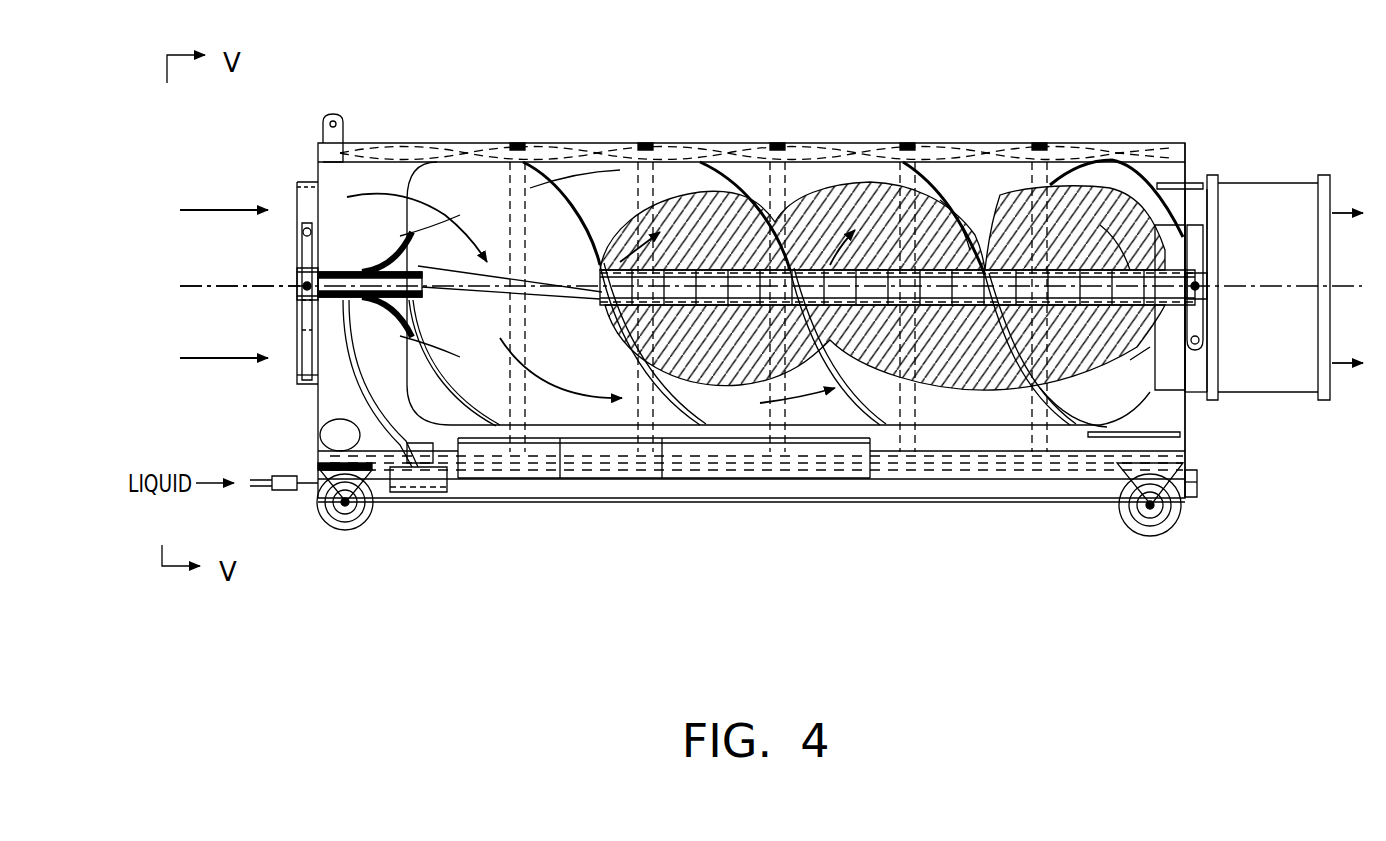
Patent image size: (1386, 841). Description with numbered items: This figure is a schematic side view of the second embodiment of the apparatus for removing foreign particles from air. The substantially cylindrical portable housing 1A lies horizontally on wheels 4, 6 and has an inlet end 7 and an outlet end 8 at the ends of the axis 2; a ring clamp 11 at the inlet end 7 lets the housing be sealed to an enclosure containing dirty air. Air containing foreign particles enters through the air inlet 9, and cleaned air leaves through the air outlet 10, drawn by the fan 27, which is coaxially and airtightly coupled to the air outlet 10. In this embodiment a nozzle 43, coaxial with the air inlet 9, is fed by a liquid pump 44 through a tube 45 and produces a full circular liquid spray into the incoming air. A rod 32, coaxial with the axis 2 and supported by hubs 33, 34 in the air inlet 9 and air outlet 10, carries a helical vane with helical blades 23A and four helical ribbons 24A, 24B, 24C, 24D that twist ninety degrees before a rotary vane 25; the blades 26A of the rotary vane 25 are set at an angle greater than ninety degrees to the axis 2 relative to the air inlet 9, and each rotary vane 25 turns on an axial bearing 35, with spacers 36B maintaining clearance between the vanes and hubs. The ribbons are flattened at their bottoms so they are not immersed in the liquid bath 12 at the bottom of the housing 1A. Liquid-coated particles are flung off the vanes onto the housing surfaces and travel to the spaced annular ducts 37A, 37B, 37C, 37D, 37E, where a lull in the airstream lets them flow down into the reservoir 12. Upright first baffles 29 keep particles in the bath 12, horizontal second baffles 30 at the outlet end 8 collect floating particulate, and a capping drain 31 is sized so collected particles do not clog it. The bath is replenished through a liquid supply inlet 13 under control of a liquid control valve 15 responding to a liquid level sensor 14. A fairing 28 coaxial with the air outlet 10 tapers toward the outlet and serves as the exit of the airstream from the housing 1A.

The housing 1A is at (712, 160).
The axis 2 is at (232, 290).
The wheel 4 is at (348, 530).
The wheel 6 is at (1148, 536).
The inlet end 7 is at (317, 177).
The outlet end 8 is at (1187, 150).
The air inlet 9 is at (297, 362).
The air outlet 10 is at (1200, 183).
The ring clamp 11 is at (335, 114).
The liquid bath 12 is at (925, 462).
The liquid supply inlet 13 is at (283, 490).
The liquid level sensor 14 is at (372, 487).
The liquid control valve 15 is at (418, 443).
The helical blade 23A is at (408, 200).
The helical ribbon 24A is at (578, 258).
The helical ribbon 24B is at (737, 163).
The helical ribbon 24C is at (920, 225).
The helical ribbon 24D is at (1110, 185).
The rotary vane 25 is at (797, 215).
The vane blade 26A is at (810, 205).
The fan 27 is at (1265, 183).
The fairing 28 is at (1160, 392).
The first baffles 29 is at (663, 455).
The second baffles 30 is at (1145, 435).
The capping drain 31 is at (1197, 488).
The rod 32 is at (328, 272).
The hub 33 is at (303, 268).
The hub 34 is at (1198, 277).
The axial bearing 35 is at (950, 200).
The spacer 36B is at (1108, 230).
The annular duct 37A is at (520, 141).
The annular duct 37B is at (650, 140).
The annular duct 37C is at (778, 142).
The annular duct 37D is at (910, 142).
The annular duct 37E is at (1062, 160).
The nozzle 43 is at (373, 318).
The liquid pump 44 is at (435, 492).
The tube 45 is at (345, 403).